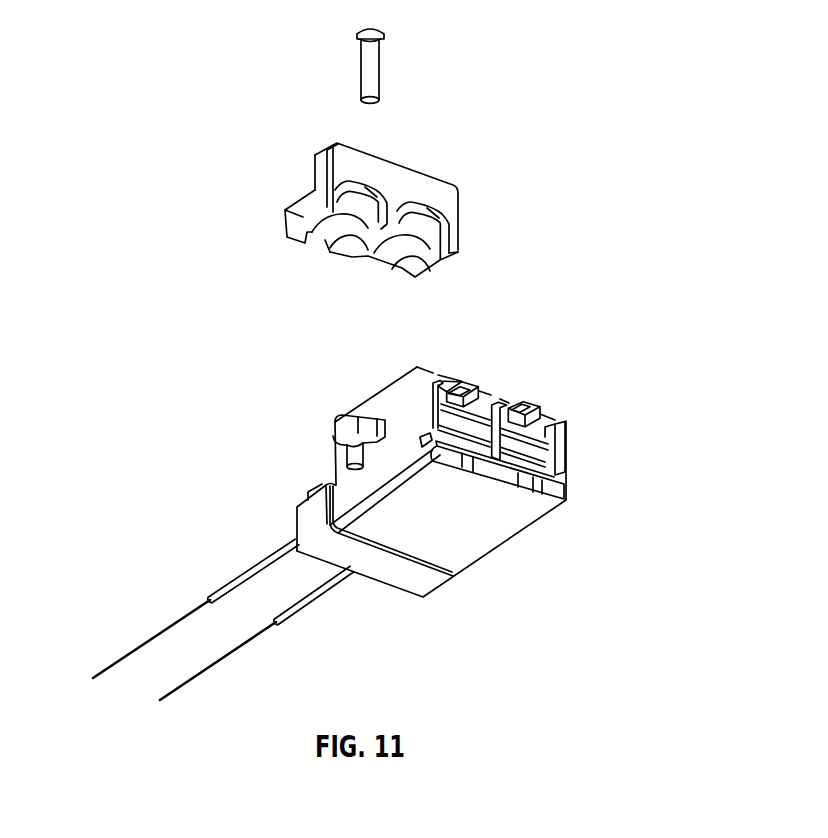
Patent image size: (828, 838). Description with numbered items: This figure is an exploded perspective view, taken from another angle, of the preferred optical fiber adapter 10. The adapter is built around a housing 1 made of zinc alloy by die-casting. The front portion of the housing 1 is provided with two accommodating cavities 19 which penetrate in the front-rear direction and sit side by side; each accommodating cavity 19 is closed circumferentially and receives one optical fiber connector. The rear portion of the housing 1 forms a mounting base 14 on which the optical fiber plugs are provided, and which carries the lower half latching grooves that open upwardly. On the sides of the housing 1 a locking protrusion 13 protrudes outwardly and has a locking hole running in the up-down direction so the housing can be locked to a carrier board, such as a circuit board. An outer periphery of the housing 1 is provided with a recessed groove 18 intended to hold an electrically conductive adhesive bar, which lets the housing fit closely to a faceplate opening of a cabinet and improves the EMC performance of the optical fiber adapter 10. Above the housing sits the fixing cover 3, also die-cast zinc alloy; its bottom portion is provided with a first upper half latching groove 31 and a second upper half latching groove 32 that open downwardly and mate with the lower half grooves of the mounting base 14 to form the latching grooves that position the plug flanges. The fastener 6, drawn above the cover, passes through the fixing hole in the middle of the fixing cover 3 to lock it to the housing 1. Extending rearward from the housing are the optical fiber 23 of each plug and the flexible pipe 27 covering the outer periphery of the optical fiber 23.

The housing 1 is at (434, 511).
The fixing cover 3 is at (428, 252).
The fastener 6 is at (372, 63).
The optical fiber adapter 10 is at (612, 91).
The locking protrusion 13 is at (348, 422).
The mounting base 14 is at (302, 521).
The recessed groove 18 is at (432, 568).
The accommodating cavity 19 is at (547, 453).
The optical fiber 23 is at (158, 632).
The flexible pipe 27 is at (255, 562).
The first upper half latching groove 31 is at (458, 251).
The second upper half latching groove 32 is at (418, 262).